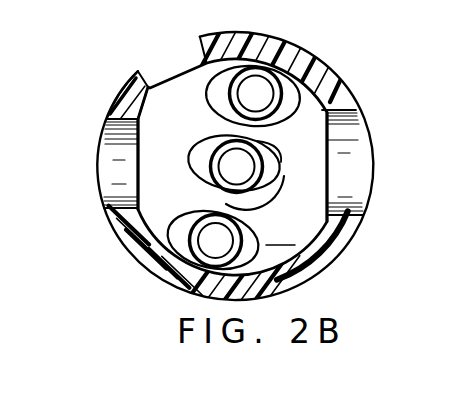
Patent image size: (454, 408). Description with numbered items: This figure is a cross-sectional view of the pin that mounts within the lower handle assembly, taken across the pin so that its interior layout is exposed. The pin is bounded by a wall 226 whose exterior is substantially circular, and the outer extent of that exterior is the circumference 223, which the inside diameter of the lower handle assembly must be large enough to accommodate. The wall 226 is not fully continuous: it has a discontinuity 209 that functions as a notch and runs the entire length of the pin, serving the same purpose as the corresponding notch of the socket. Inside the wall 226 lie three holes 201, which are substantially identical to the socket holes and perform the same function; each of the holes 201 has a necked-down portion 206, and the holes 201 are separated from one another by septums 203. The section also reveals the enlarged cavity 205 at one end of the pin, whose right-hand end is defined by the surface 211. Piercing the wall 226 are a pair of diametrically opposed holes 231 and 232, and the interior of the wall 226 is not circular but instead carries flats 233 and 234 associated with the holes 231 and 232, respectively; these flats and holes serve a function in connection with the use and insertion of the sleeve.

The holes 201 is at (257, 92).
The septums 203 is at (287, 173).
The enlarged cavity 205 is at (192, 120).
The necked-down portion 206 is at (282, 96).
The notch 209 is at (175, 68).
The surface 211 is at (280, 235).
The circumference 223 is at (338, 262).
The wall 226 is at (274, 46).
The hole 231 is at (117, 184).
The hole 232 is at (355, 137).
The flat 233 is at (141, 147).
The flat 234 is at (326, 149).